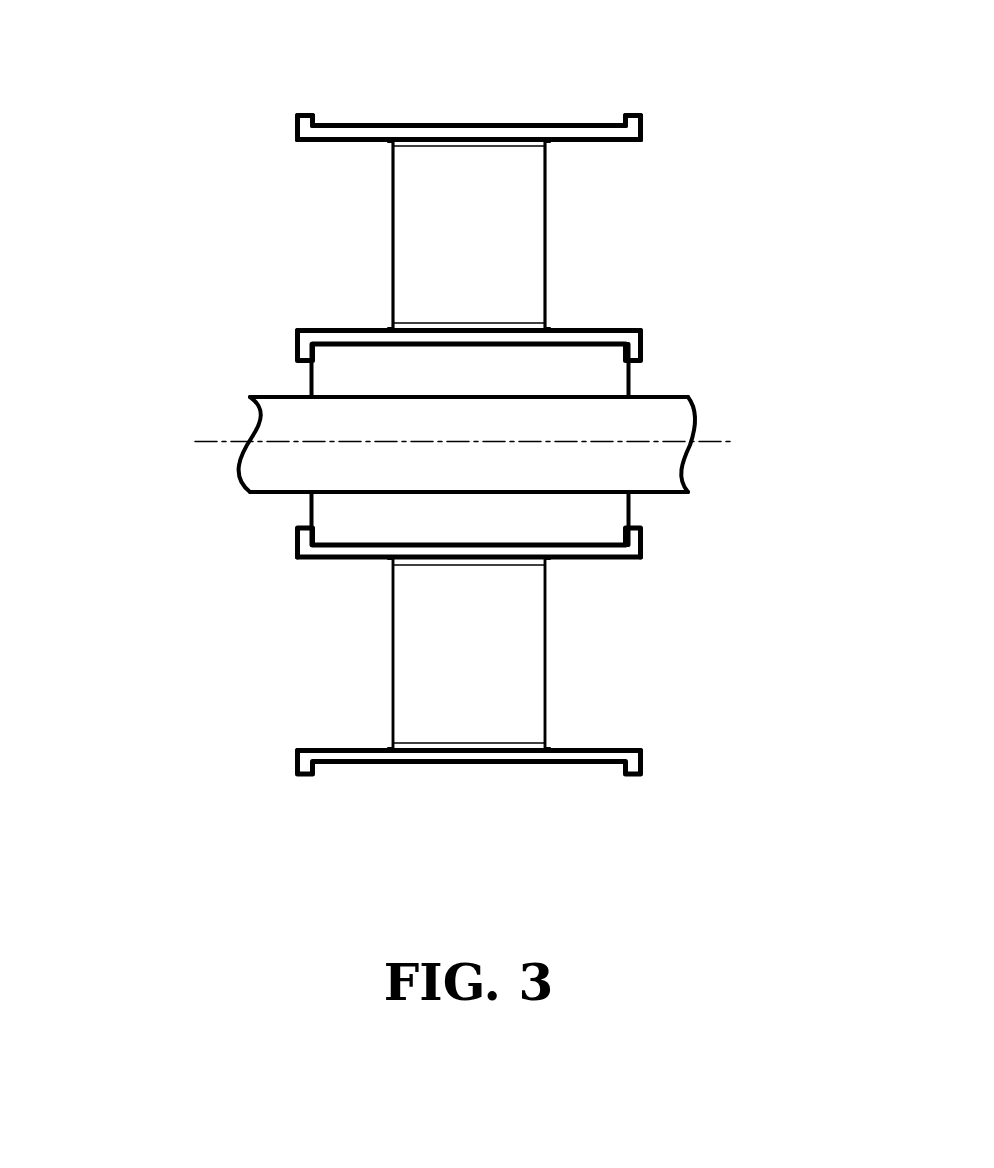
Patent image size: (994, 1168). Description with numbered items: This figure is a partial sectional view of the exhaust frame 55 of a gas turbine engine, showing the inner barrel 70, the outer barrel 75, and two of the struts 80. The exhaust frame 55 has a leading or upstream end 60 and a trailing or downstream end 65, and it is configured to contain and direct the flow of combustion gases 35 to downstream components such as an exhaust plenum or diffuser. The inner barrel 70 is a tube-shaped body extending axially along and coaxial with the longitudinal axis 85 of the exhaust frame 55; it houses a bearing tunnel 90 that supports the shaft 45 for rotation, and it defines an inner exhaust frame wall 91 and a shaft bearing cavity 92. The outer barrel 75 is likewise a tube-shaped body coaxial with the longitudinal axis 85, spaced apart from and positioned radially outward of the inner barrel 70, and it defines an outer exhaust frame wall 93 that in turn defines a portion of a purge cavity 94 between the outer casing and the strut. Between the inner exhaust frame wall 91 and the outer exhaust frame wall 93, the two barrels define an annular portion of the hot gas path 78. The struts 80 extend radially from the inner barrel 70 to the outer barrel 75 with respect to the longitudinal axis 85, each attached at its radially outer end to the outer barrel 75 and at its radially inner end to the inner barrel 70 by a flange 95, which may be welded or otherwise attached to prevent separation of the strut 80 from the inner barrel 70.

The combustion gases 35 is at (292, 228).
The shaft 45 is at (663, 400).
The exhaust frame 55 is at (240, 62).
The upstream end 60 is at (258, 128).
The downstream end 65 is at (658, 200).
The inner barrel 70 is at (620, 333).
The outer barrel 75 is at (580, 131).
The hot gas path 78 is at (313, 212).
The strut 80 is at (415, 272).
The longitudinal axis 85 is at (703, 441).
The bearing tunnel 90 is at (335, 380).
The inner exhaust frame wall 91 is at (603, 327).
The shaft bearing cavity 92 is at (618, 380).
The outer exhaust frame wall 93 is at (572, 143).
The purge cavity 94 is at (480, 96).
The flange 95 is at (522, 322).